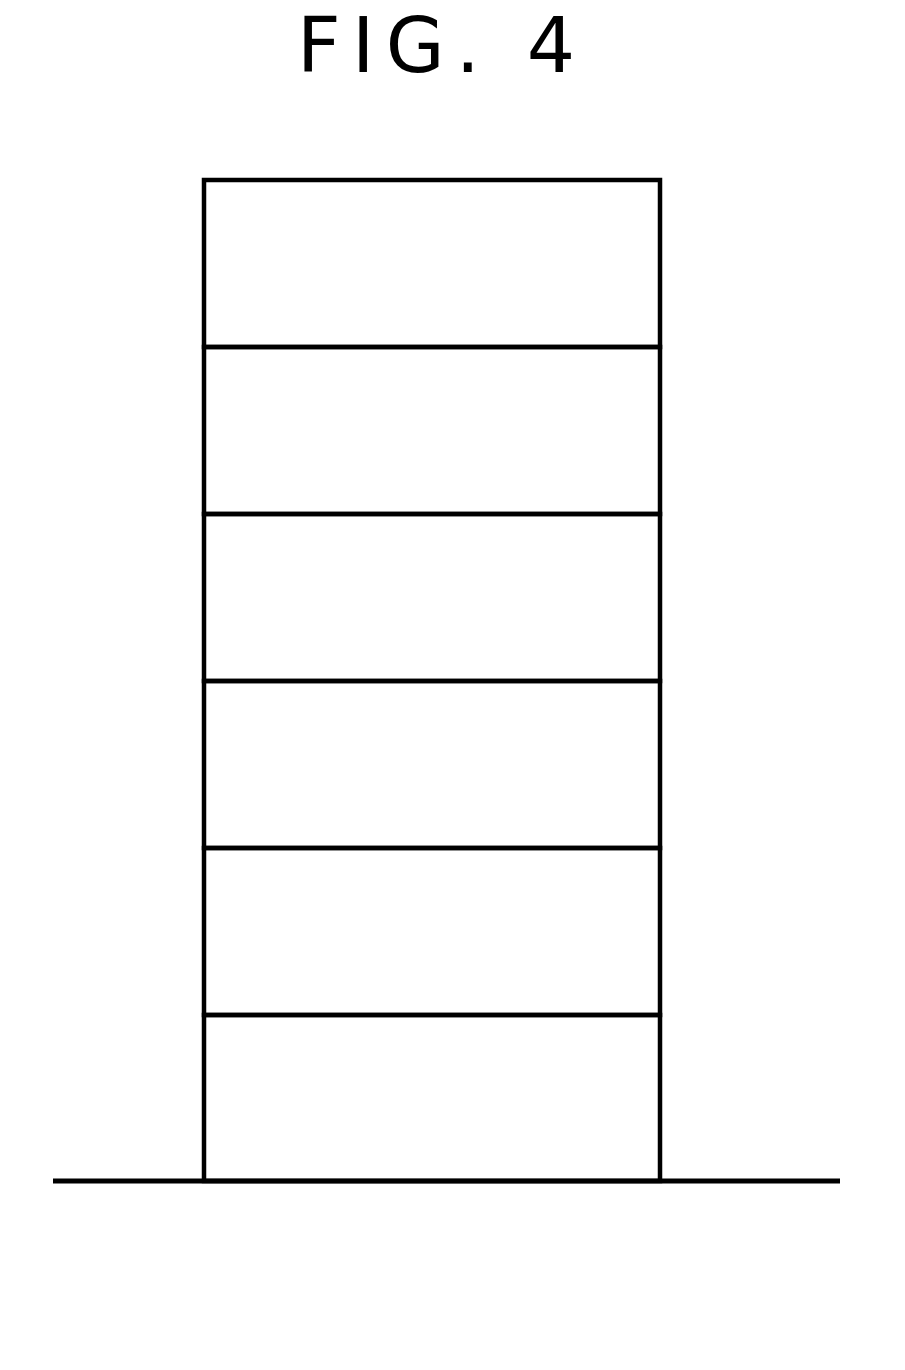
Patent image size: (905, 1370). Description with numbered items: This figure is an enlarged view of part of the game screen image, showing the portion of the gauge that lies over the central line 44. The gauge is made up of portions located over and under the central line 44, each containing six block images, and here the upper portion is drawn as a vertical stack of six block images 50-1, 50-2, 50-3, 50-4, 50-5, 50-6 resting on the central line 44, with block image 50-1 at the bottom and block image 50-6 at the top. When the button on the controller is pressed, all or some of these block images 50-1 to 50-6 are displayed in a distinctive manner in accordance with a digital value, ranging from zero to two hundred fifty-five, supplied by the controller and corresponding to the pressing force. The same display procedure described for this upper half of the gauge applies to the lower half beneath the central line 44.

The block image 50-1 is at (508, 1135).
The block image 50-2 is at (508, 968).
The block image 50-3 is at (508, 801).
The block image 50-4 is at (508, 634).
The block image 50-5 is at (508, 467).
The block image 50-6 is at (508, 300).
The central line 44 is at (743, 1180).